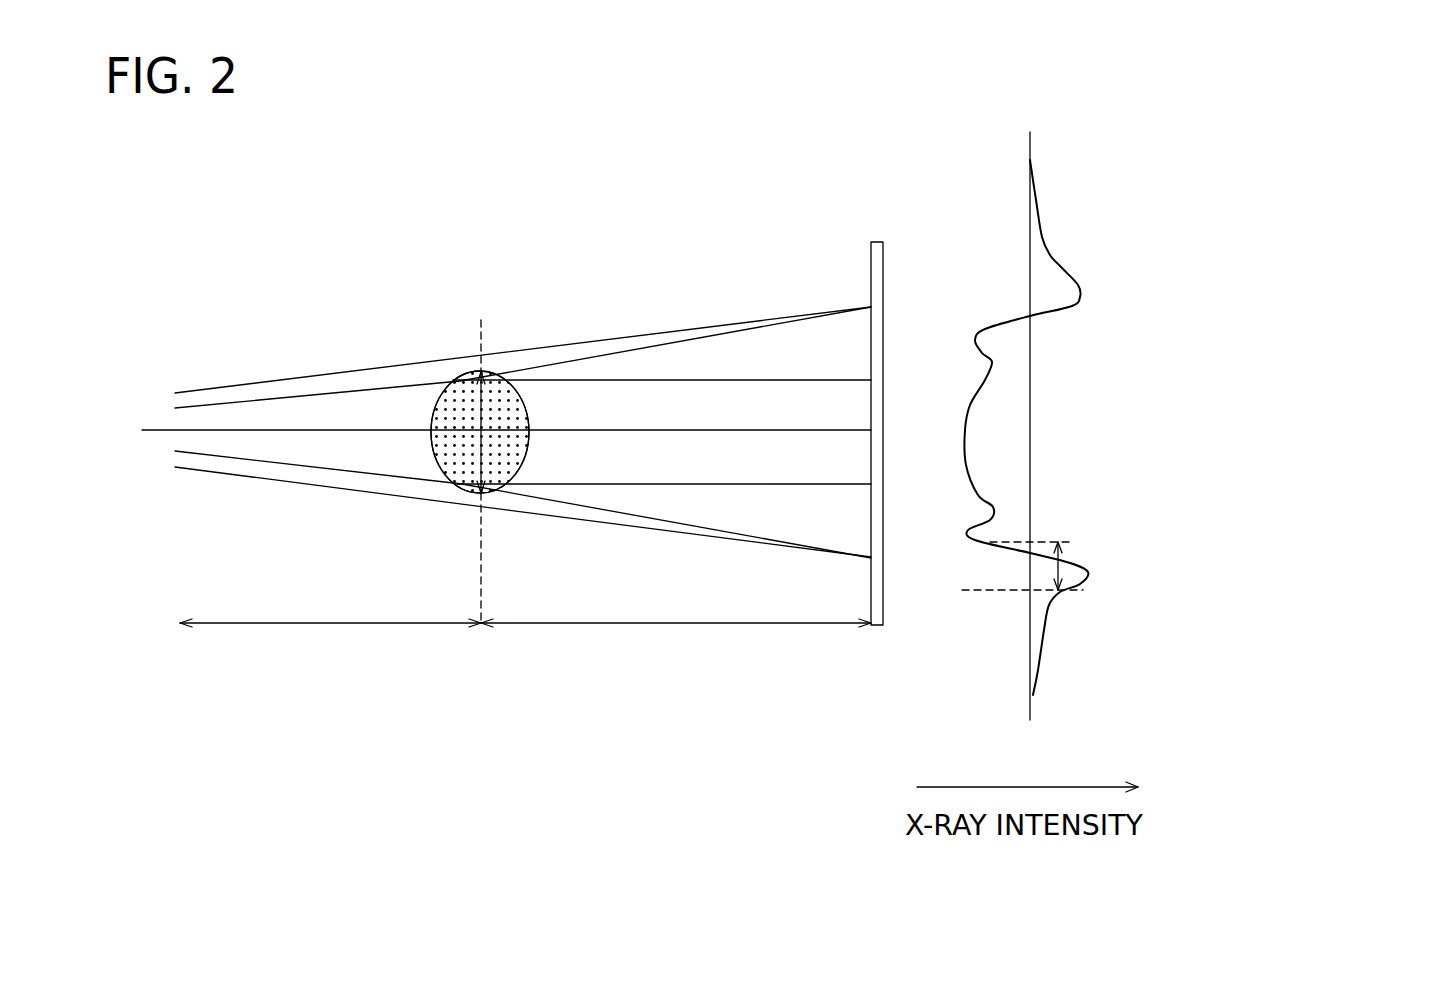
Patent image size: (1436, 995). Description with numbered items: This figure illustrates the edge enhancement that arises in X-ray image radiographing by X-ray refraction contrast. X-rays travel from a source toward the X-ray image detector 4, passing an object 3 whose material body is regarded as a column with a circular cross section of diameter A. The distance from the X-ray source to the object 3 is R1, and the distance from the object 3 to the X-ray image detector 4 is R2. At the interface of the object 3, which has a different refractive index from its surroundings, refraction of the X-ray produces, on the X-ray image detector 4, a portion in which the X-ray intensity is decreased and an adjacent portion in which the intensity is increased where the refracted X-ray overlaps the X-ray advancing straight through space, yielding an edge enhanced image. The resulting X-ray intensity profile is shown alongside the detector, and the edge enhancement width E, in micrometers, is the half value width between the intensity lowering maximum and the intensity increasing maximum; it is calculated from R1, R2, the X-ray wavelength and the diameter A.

The object 3 is at (484, 401).
The X-ray image detector 4 is at (877, 255).
The diameter of the circle of the cross section A is at (671, 470).
The distance from the X-ray source to the object R1 is at (330, 604).
The distance from the object to the X-ray image detector R2 is at (676, 603).
The edge enhancement width E is at (1063, 560).